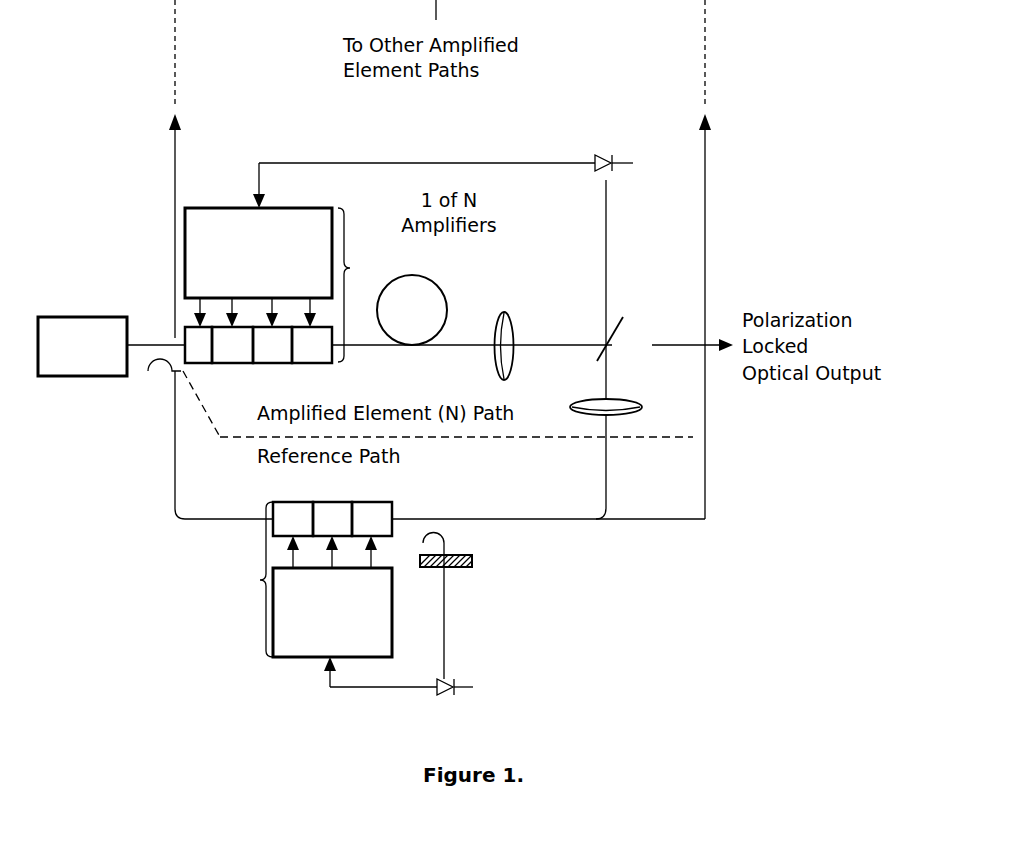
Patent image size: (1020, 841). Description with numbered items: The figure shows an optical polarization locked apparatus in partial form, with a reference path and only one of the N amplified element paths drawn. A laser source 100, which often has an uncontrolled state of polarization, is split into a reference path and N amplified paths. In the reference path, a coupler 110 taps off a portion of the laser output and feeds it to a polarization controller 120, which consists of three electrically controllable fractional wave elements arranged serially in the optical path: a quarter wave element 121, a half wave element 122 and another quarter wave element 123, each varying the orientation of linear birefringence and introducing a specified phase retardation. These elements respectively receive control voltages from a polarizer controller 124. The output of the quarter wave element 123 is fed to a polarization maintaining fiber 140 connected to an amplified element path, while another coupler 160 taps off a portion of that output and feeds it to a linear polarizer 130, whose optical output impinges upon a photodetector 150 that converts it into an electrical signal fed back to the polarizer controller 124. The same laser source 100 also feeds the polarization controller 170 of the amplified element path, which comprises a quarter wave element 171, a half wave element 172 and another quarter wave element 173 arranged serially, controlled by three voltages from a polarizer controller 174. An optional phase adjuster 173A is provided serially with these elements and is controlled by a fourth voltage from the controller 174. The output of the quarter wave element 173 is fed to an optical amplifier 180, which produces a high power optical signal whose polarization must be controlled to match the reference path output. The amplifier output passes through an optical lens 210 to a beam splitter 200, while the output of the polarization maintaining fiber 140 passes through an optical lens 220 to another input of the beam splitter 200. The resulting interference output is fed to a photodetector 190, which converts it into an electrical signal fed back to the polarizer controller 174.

The laser source 100 is at (72, 378).
The coupler 110 is at (158, 369).
The polarization controller 120 is at (245, 579).
The quarter wave element 121 is at (293, 505).
The half wave element 122 is at (332, 505).
The quarter wave element 123 is at (372, 505).
The polarizer controller 124 is at (332, 627).
The linear polarizer 130 is at (515, 572).
The polarization maintaining fiber 140 is at (440, 324).
The photodetector 150 is at (469, 697).
The coupler 160 is at (457, 603).
The polarization controller 170 is at (362, 285).
The quarter wave element 171 is at (232, 359).
The half wave element 172 is at (272, 359).
The quarter wave element 173 is at (312, 359).
The phase adjuster 173A is at (187, 327).
The polarizer controller 174 is at (258, 239).
The optical amplifier 180 is at (412, 310).
The photodetector 190 is at (614, 149).
The beam splitter 200 is at (623, 339).
The optical lens 210 is at (507, 332).
The optical lens 220 is at (627, 406).